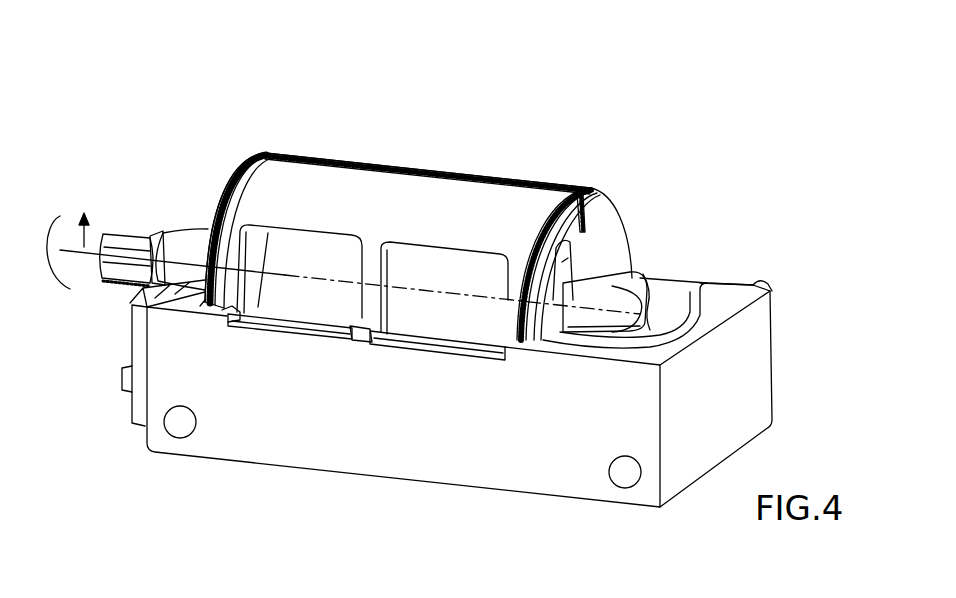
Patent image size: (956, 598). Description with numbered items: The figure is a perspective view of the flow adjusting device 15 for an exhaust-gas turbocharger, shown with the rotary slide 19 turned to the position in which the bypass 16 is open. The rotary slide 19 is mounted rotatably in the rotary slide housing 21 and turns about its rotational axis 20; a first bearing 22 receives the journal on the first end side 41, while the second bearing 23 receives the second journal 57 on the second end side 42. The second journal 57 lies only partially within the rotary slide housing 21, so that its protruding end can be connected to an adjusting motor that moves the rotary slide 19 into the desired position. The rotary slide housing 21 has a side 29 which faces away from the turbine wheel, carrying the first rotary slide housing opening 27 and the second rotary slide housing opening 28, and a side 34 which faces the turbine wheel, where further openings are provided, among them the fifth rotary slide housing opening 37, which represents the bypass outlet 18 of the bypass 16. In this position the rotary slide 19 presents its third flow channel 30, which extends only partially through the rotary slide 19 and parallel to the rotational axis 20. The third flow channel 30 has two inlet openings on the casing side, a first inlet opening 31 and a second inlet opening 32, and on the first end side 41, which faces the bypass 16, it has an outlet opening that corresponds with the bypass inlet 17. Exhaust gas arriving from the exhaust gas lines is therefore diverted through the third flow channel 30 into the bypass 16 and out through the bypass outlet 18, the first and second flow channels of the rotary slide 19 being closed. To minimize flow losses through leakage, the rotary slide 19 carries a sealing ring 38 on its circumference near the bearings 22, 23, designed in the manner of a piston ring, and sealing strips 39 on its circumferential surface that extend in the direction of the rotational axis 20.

The flow adjusting device 15 is at (617, 71).
The bypass 16 is at (690, 292).
The bypass inlet 17 is at (578, 298).
The bypass outlet 18 is at (712, 258).
The rotary slide 19 is at (437, 190).
The rotational axis 20 is at (68, 245).
The rotary slide housing 21 is at (578, 470).
The first bearing 22 is at (603, 283).
The second bearing 23 is at (188, 237).
The first rotary slide housing opening 27 is at (307, 330).
The second rotary slide housing opening 28 is at (420, 345).
The side which faces away from the turbine wheel 29 is at (235, 427).
The third flow channel 30 is at (410, 267).
The first inlet opening 31 is at (306, 248).
The second inlet opening 32 is at (462, 271).
The side which faces the turbine wheel 34 is at (775, 289).
The fifth rotary slide housing opening 37 is at (668, 300).
The sealing ring 38 is at (220, 195).
The sealing strip 39 is at (355, 163).
The first end side 41 is at (598, 188).
The second end side 42 is at (224, 189).
The second journal 57 is at (128, 230).